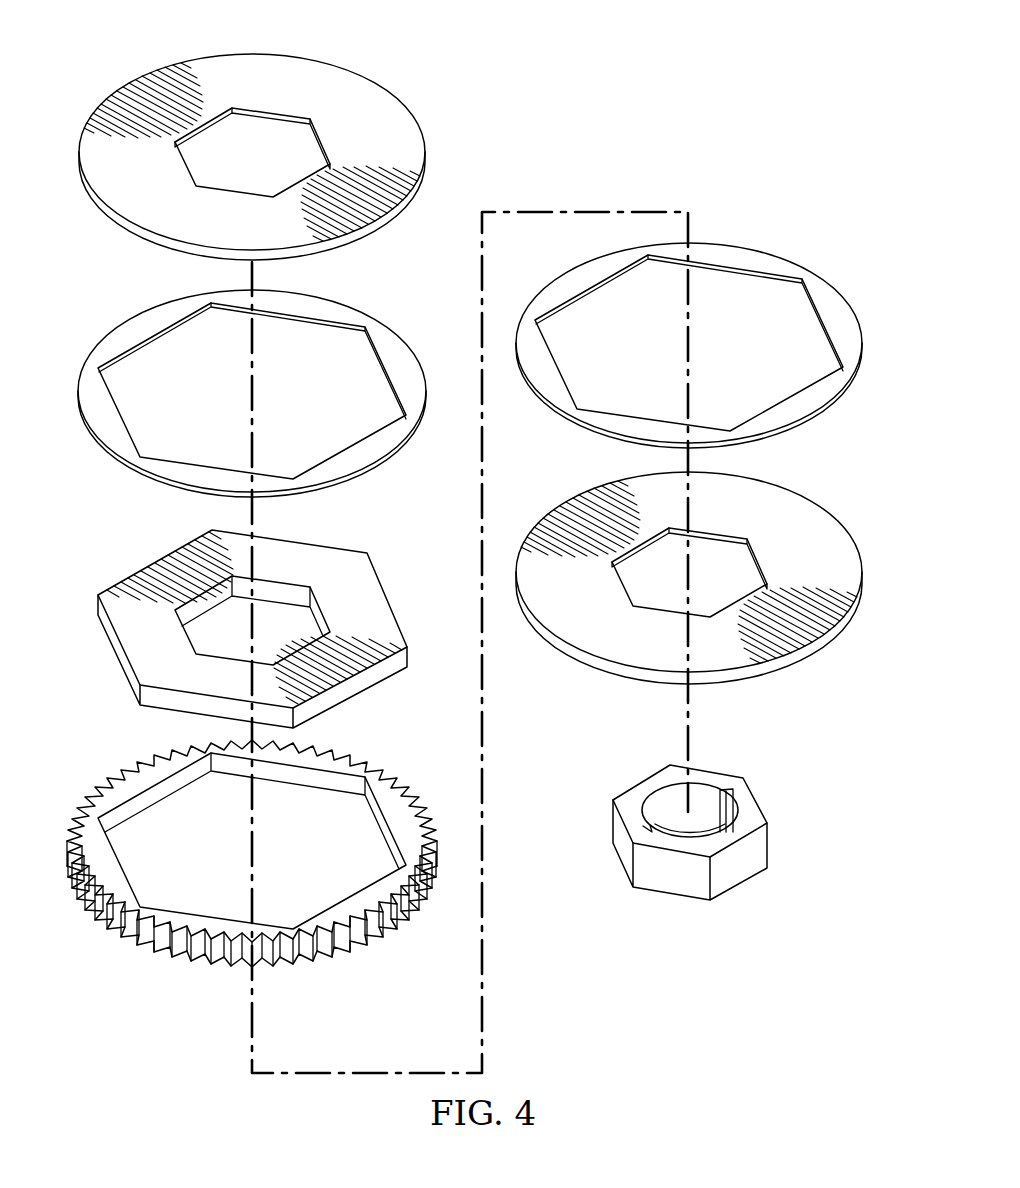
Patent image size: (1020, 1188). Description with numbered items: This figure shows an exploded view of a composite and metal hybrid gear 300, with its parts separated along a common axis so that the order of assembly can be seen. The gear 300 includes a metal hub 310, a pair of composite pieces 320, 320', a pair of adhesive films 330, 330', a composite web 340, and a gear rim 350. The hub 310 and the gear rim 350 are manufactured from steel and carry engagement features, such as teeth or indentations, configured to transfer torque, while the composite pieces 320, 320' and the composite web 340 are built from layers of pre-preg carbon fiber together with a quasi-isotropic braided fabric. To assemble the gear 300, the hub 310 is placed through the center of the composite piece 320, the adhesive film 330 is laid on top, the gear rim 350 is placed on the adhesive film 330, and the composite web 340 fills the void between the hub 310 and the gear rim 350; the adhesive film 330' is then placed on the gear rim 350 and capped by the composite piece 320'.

The gear 300 is at (613, 142).
The hub 310 is at (672, 897).
The composite piece 320 is at (252, 135).
The composite piece 320' is at (689, 565).
The adhesive film 330 is at (252, 383).
The adhesive film 330' is at (689, 328).
The composite web 340 is at (305, 543).
The gear rim 350 is at (160, 958).